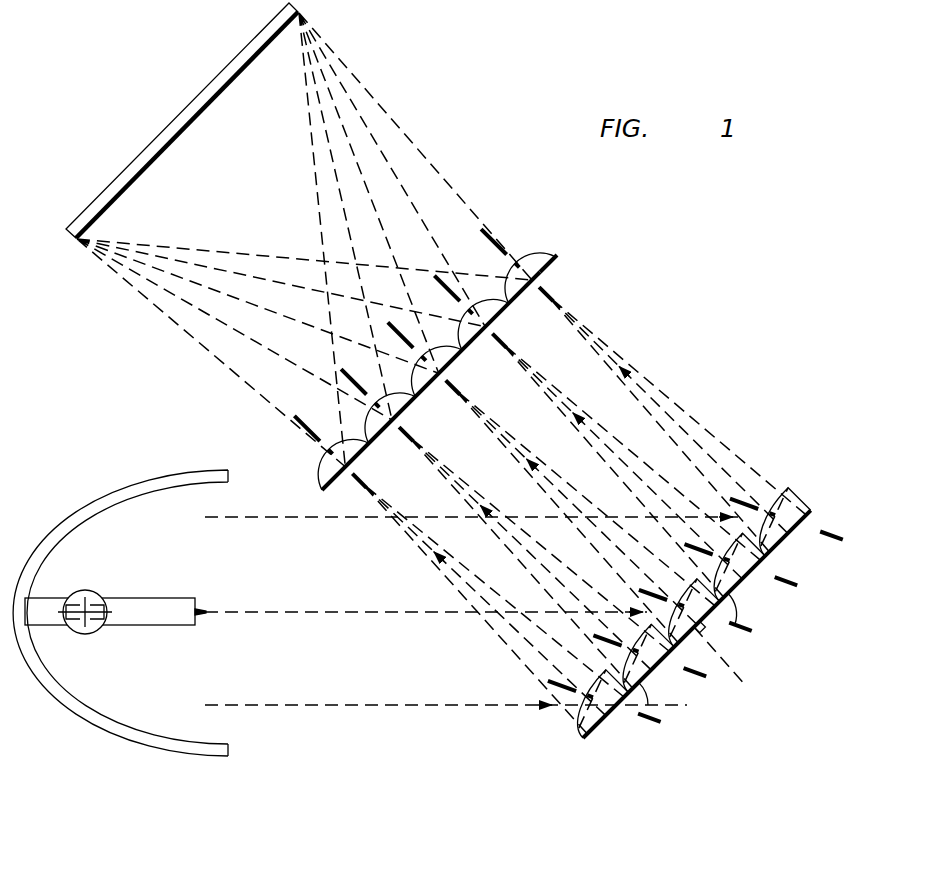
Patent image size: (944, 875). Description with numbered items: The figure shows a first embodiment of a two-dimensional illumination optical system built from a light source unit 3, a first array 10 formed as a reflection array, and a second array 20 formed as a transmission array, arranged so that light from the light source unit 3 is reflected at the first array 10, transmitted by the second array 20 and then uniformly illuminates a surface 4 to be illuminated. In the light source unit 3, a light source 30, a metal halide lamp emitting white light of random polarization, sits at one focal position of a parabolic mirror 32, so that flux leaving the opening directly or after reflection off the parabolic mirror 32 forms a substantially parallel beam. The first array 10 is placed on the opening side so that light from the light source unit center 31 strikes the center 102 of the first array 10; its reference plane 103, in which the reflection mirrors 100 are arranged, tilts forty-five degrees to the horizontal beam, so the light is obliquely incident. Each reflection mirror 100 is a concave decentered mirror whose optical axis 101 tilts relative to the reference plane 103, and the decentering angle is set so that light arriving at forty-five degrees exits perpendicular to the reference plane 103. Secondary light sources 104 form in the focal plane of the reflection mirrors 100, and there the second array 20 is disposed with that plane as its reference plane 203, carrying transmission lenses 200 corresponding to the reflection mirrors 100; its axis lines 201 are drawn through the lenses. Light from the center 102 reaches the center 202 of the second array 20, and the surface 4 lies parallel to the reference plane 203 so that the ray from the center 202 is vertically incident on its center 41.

The light source unit 3 is at (121, 594).
The surface to be illuminated 4 is at (182, 120).
The center of the surface to be illuminated 41 is at (188, 128).
The first array 10 is at (681, 598).
The reflection mirror 100 is at (783, 488).
The optical axis 101 is at (830, 537).
The center of the first array 102 is at (720, 632).
The reference plane 103 is at (785, 541).
The secondary light source 104 is at (544, 292).
The second array 20 is at (426, 343).
The transmission lens 200 is at (535, 257).
The optical axis of second lens array lens 201 is at (316, 438).
The center of the second array 202 is at (448, 375).
The reference plane of the second array 203 is at (556, 266).
The light source 30 is at (95, 635).
The light source unit center 31 is at (202, 606).
The parabolic mirror 32 is at (117, 510).